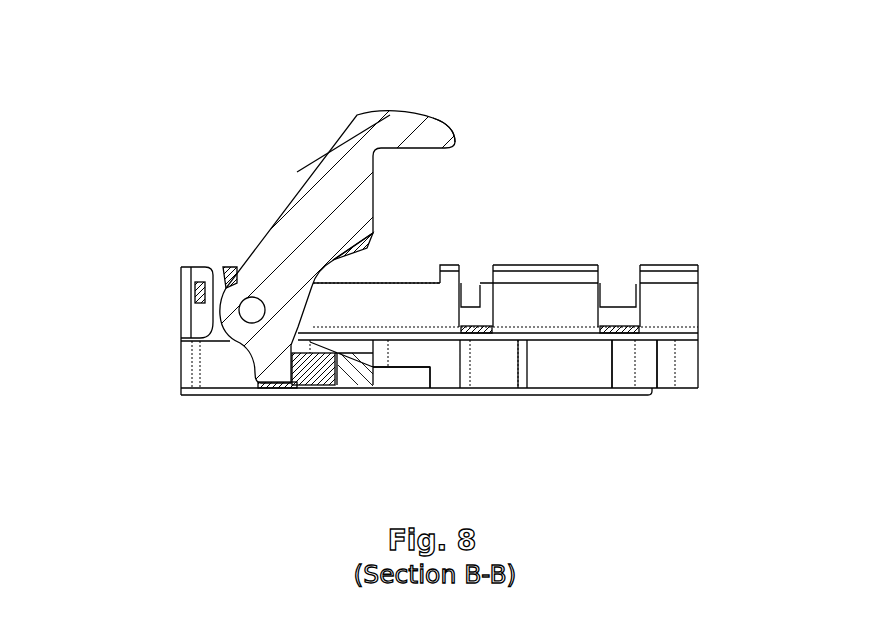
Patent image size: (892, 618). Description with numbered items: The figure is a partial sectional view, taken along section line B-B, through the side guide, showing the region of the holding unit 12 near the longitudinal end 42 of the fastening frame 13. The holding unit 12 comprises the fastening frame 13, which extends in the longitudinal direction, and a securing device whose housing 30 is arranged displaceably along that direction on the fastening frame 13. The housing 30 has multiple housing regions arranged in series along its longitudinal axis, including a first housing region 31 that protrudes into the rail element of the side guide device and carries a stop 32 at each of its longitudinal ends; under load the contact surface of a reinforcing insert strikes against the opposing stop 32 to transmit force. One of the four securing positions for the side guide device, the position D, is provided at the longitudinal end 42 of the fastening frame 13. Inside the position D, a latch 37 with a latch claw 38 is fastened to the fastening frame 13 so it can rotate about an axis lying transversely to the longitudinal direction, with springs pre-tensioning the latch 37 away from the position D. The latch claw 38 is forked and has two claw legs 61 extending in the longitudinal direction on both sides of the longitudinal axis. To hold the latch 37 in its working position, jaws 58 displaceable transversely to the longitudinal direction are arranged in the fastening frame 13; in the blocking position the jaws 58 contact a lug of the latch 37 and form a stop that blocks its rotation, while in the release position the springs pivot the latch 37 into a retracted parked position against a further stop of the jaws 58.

The holding unit 12 is at (150, 130).
The fastening frame 13 is at (200, 395).
The housing 30 is at (700, 292).
The first housing region 31 is at (538, 267).
The stop 32 is at (600, 343).
The latch 37 is at (267, 142).
The latch claw 38 is at (355, 112).
The longitudinal end 42 is at (700, 320).
The jaws 58 is at (315, 392).
The claw legs 61 is at (436, 127).
The position D is at (608, 268).